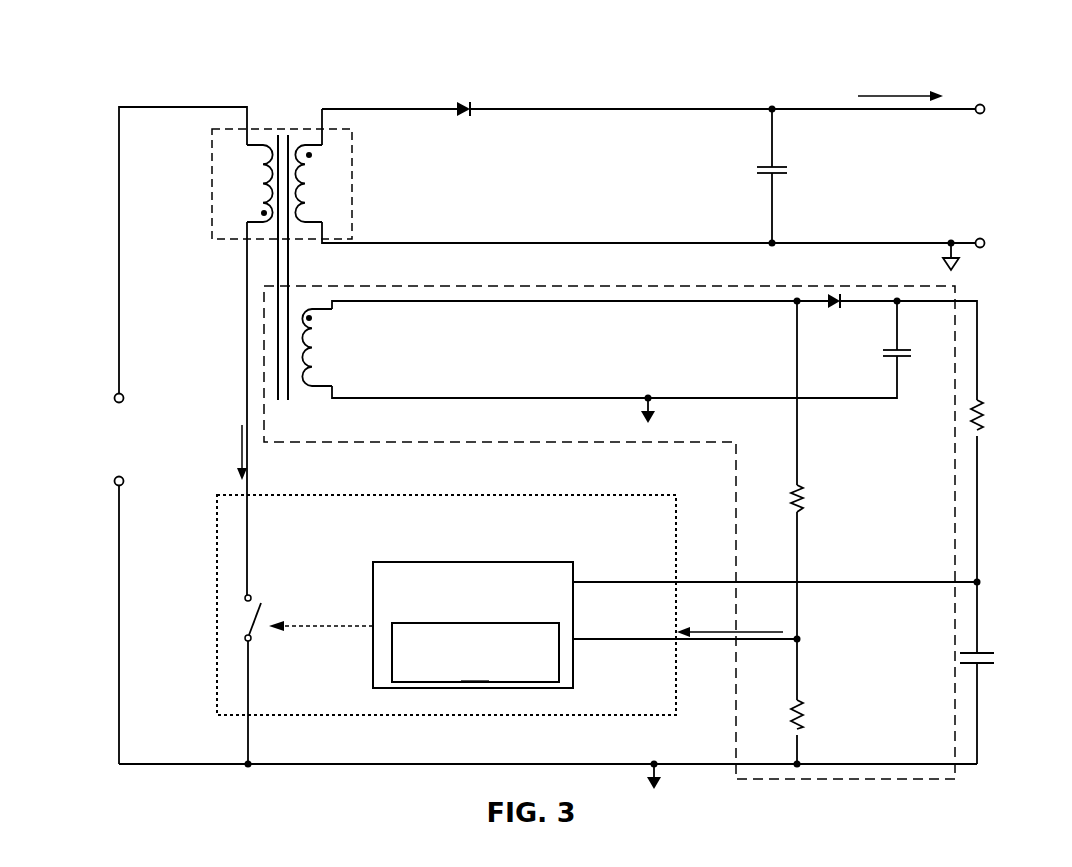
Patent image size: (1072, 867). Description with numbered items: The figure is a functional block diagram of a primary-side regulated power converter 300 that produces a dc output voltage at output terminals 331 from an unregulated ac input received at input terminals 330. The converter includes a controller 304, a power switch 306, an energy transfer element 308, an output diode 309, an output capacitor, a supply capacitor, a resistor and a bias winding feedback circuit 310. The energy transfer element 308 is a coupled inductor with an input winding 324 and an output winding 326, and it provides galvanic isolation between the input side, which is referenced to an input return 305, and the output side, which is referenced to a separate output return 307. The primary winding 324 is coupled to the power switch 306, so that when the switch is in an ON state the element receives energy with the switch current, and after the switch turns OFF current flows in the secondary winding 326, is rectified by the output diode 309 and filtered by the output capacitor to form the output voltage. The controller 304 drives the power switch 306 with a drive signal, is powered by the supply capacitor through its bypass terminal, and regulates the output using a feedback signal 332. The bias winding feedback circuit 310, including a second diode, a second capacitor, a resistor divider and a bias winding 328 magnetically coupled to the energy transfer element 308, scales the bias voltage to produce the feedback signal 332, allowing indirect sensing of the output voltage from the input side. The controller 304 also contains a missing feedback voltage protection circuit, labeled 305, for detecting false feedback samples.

The power converter 300 is at (69, 42).
The controller 304 is at (459, 619).
The input return 305 is at (653, 410).
The power switch 306 is at (243, 626).
The output return 307 is at (957, 255).
The energy transfer element 308 is at (312, 128).
The output diode D1 309 is at (443, 97).
The bias winding feedback circuit 310 is at (955, 384).
The input winding 324 is at (257, 186).
The output winding 326 is at (312, 186).
The bias winding 328 is at (313, 359).
The input terminals 330 is at (115, 395).
The output terminals 331 is at (992, 110).
The feedback signal UFB 332 is at (730, 612).